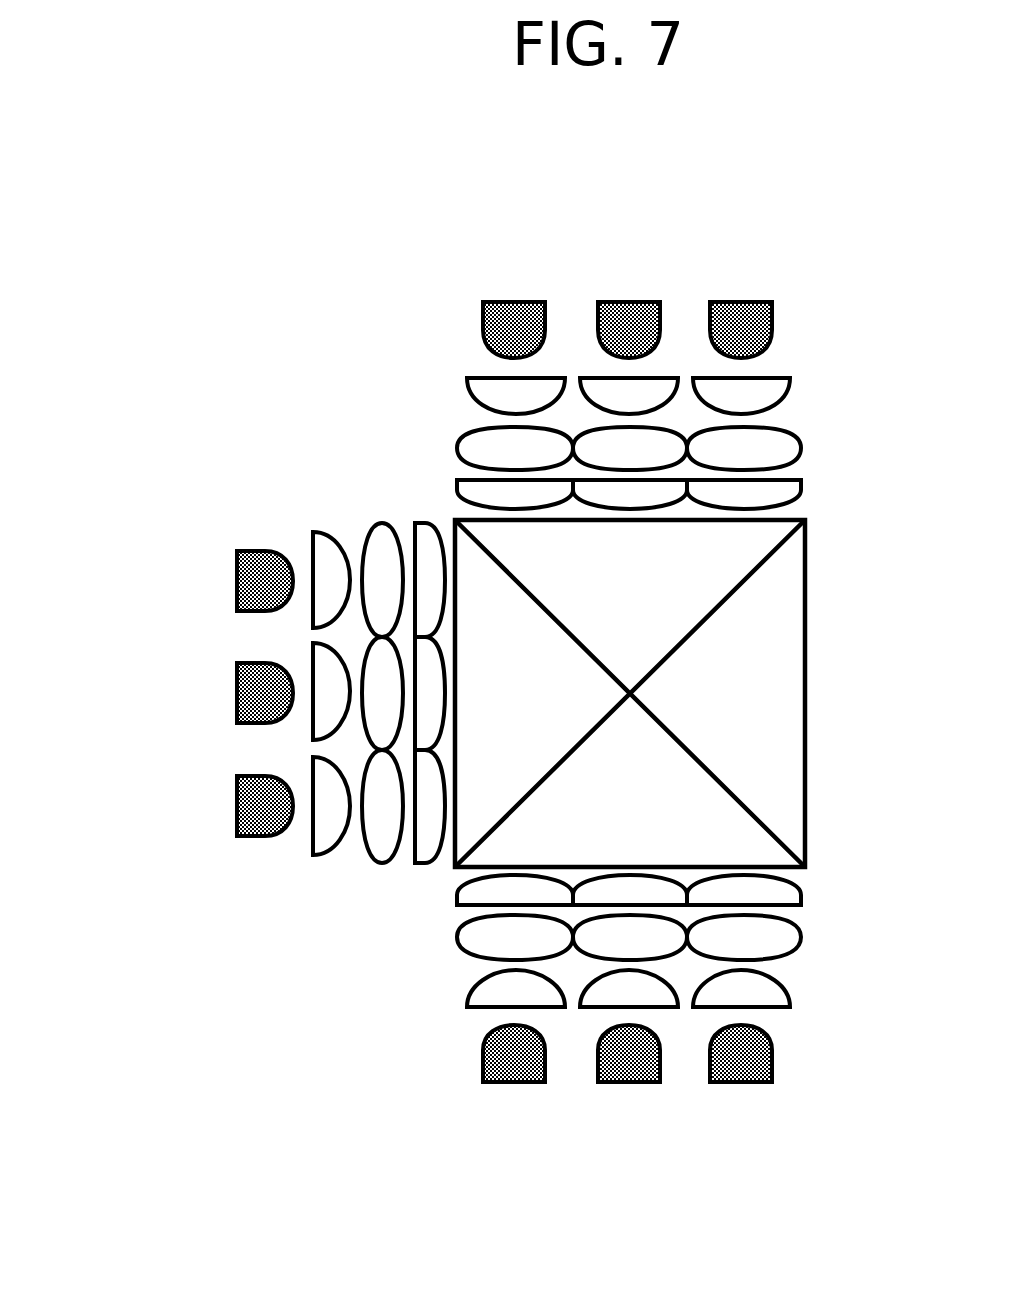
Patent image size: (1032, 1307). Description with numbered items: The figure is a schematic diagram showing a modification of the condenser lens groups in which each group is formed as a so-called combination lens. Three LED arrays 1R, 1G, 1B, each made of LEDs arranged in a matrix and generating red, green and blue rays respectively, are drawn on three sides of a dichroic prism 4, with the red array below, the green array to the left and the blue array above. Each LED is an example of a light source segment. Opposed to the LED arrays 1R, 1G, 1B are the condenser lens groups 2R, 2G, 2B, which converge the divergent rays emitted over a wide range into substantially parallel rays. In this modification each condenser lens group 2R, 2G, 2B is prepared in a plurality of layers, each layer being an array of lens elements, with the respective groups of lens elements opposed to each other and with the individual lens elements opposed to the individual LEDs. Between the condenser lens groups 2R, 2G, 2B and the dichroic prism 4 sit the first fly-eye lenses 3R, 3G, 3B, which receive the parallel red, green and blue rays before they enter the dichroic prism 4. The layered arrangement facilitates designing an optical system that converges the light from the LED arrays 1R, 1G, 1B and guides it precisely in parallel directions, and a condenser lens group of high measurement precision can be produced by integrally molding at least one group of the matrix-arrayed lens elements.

The LED array 1B is at (737, 282).
The condenser lens group 2B is at (823, 372).
The first fly-eye lens 3B is at (801, 490).
The dichroic prism 4 is at (773, 710).
The LED array 1G is at (220, 803).
The condenser lens group 2G is at (400, 885).
The first fly-eye lens 3G is at (428, 865).
The LED array 1R is at (737, 1102).
The condenser lens group 2R is at (823, 913).
The first fly-eye lens 3R is at (801, 893).